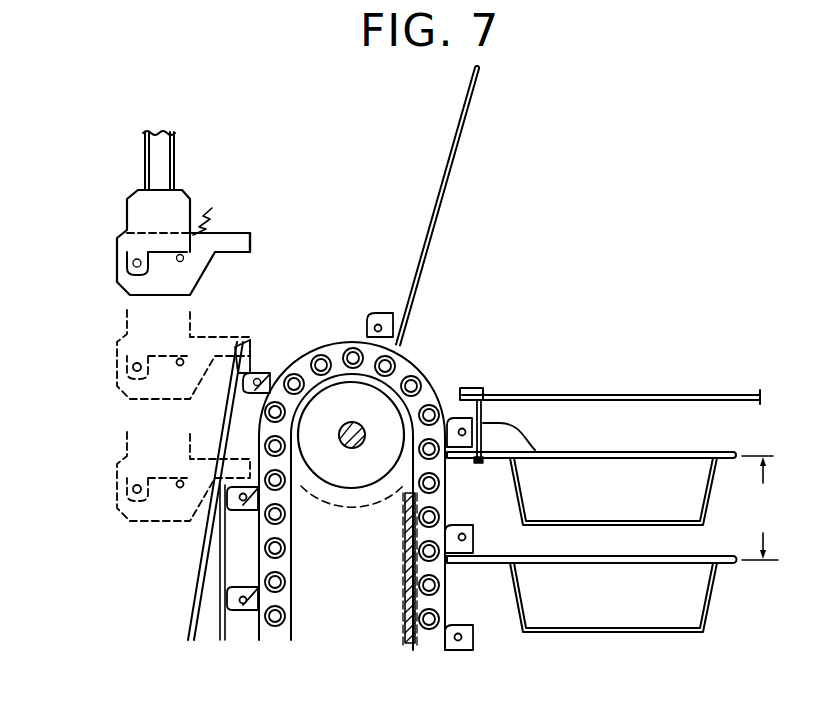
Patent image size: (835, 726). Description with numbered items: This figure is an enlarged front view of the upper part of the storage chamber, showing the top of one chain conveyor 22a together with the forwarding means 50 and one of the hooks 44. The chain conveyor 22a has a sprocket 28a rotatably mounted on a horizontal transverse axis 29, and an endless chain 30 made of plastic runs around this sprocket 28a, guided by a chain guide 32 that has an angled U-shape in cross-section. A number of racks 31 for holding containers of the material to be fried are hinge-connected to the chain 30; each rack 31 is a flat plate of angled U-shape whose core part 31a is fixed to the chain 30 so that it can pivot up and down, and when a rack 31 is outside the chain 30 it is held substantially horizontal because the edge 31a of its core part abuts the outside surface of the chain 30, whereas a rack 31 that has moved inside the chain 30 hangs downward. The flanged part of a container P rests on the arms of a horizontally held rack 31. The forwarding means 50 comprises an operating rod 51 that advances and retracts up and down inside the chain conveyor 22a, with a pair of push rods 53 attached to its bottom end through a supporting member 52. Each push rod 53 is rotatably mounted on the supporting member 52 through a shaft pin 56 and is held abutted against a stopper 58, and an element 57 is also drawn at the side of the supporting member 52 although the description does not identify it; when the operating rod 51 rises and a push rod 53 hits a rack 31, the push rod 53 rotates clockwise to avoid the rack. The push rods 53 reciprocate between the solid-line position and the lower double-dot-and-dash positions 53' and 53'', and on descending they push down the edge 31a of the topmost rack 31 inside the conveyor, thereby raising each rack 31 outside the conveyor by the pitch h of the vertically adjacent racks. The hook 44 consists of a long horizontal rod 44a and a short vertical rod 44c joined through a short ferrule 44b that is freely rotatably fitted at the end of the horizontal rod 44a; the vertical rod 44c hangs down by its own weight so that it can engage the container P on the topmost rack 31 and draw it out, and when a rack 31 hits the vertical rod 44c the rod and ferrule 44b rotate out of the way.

The forwarding means 50 is at (172, 211).
The operating rod 51 is at (148, 153).
The supporting member 52 is at (140, 203).
The push rod 53 is at (255, 231).
The push rod (lowered position) 53' is at (142, 354).
The push rod (further lowered position) 53'' is at (139, 476).
The shaft pin 56 is at (126, 265).
The spring 57 is at (213, 208).
The stopper 58 is at (198, 270).
The rack 31 is at (445, 172).
The core part (edge) of rack 31a is at (245, 343).
The chain conveyor 22a is at (447, 375).
The sprocket 28a is at (330, 500).
The horizontal transverse axis 29 is at (352, 447).
The endless chain 30 is at (405, 622).
The chain guide 32 is at (405, 646).
The hook 44 is at (612, 393).
The horizontal rod 44a is at (700, 393).
The ferrule 44b is at (480, 390).
The vertical rod 44c is at (537, 458).
The container P is at (672, 453).
The pitch h is at (760, 508).